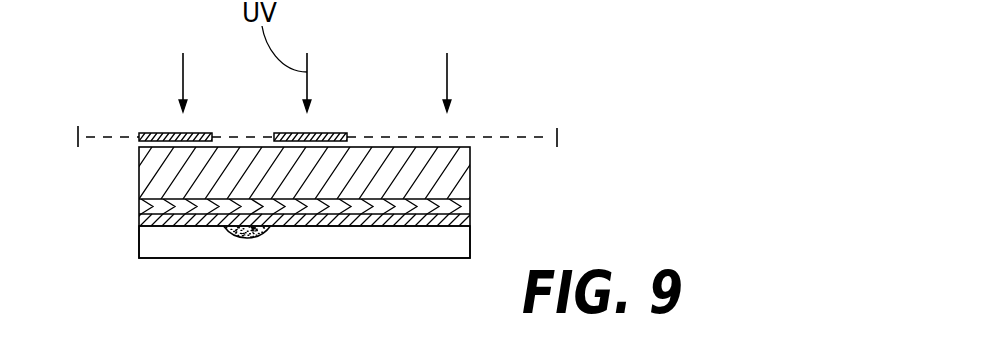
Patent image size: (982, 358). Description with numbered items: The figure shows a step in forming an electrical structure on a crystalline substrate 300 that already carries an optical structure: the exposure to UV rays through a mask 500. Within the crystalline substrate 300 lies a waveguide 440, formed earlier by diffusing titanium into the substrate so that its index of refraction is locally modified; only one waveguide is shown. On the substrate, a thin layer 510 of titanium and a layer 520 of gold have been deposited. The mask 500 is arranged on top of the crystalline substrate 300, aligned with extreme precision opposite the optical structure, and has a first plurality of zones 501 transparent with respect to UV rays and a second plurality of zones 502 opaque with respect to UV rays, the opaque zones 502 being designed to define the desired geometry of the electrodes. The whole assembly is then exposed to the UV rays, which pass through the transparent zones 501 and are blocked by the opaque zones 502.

The crystalline substrate 300 is at (150, 241).
The waveguide 440 is at (248, 236).
The mask 500 is at (370, 77).
The zones transparent with respect to UV rays 501 is at (391, 137).
The zones opaque with respect to UV rays 502 is at (157, 132).
The thin layer of titanium 510 is at (470, 220).
The layer of gold 520 is at (139, 210).